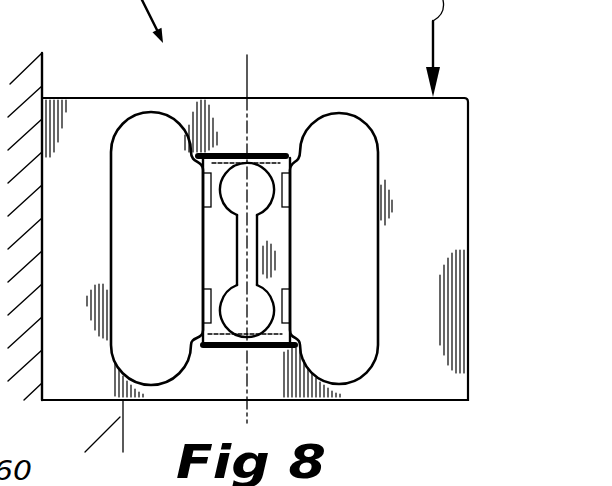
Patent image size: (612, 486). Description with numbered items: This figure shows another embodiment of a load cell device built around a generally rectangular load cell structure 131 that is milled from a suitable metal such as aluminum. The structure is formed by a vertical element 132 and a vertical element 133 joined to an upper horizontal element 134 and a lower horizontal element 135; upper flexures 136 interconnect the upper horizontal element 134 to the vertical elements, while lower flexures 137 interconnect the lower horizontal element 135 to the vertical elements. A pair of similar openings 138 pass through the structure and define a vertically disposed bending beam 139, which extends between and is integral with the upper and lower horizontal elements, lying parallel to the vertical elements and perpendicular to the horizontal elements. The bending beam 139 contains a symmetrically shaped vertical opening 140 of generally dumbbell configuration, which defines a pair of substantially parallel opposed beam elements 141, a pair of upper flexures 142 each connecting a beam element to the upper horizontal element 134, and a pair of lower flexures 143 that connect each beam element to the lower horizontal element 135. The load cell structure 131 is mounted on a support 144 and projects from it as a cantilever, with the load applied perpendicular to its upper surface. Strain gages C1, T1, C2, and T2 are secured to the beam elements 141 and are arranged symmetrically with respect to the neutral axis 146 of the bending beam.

The load cell structure 131 is at (467, 90).
The vertical element 132 is at (111, 309).
The vertical element 133 is at (473, 162).
The upper horizontal element 134 is at (268, 100).
The lower horizontal element 135 is at (263, 394).
The upper flexures 136 is at (148, 106).
The lower flexures 137 is at (150, 394).
The openings 138 is at (174, 205).
The bending beam 139 is at (304, 247).
The vertical opening 140 is at (257, 234).
The beam elements 141 is at (208, 250).
The upper flexures 142 is at (278, 190).
The lower flexures 143 is at (277, 307).
The support 144 is at (42, 68).
The neutral axis 146 is at (258, 40).
The strain gage C1 is at (205, 178).
The strain gage C2 is at (288, 323).
The strain gage T1 is at (199, 319).
The strain gage T2 is at (289, 175).